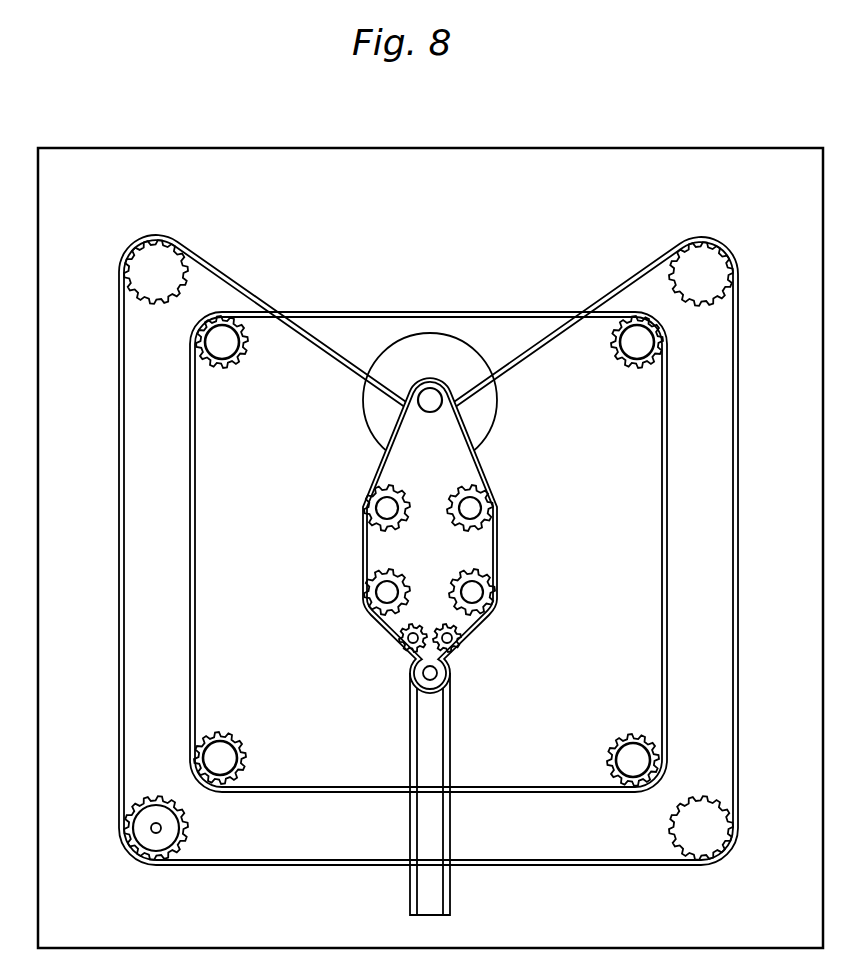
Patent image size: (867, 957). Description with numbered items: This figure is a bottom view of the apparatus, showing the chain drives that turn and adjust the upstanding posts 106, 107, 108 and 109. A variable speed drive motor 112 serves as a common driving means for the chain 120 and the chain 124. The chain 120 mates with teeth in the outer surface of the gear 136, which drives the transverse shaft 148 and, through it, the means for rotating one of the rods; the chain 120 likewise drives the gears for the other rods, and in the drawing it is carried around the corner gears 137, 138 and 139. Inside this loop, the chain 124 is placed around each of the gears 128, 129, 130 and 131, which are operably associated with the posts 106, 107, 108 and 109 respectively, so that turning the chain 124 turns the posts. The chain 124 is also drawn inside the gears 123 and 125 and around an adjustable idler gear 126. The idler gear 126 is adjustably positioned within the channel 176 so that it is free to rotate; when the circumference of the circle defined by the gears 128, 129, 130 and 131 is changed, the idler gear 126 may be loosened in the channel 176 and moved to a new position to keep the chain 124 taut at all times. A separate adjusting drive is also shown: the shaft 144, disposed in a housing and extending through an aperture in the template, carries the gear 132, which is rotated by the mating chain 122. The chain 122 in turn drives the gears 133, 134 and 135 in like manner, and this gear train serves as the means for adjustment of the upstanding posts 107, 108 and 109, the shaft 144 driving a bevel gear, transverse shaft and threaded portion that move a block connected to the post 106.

The post 106 is at (371, 590).
The post 107 is at (482, 588).
The post 108 is at (484, 517).
The post 109 is at (380, 522).
The variable speed drive motor 112 is at (430, 345).
The chain 120 is at (310, 338).
The chain 122 is at (282, 794).
The chain 124 is at (483, 458).
The gear 123 is at (404, 648).
The gear 125 is at (456, 646).
The adjustable idler gear 126 is at (452, 677).
The gear 128 is at (378, 597).
The gear 129 is at (493, 595).
The gear 130 is at (493, 511).
The gear 131 is at (366, 510).
The gear 132 is at (247, 760).
The gear 133 is at (631, 786).
The gear 134 is at (633, 368).
The gear 135 is at (232, 368).
The gear 136 is at (145, 863).
The corner pulley 137 is at (704, 850).
The corner pulley 138 is at (693, 250).
The corner pulley 139 is at (163, 256).
The shaft 144 is at (219, 756).
The transverse shaft 148 is at (160, 830).
The channel 176 is at (452, 718).